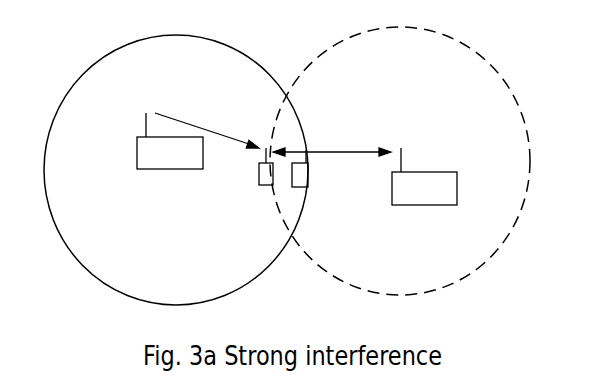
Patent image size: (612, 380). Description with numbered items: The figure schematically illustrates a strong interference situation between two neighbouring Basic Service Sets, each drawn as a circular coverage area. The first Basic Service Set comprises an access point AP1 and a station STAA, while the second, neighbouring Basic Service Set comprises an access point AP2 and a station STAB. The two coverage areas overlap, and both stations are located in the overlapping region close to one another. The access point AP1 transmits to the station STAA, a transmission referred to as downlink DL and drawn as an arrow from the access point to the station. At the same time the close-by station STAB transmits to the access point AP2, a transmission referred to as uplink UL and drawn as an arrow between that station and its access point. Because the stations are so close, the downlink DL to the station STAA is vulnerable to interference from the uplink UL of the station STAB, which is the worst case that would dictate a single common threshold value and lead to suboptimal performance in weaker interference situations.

The access point AP1 is at (170, 141).
The access point AP2 is at (424, 177).
The station STAA is at (249, 181).
The station STAB is at (310, 187).
The downlink DL is at (207, 124).
The uplink UL is at (332, 141).